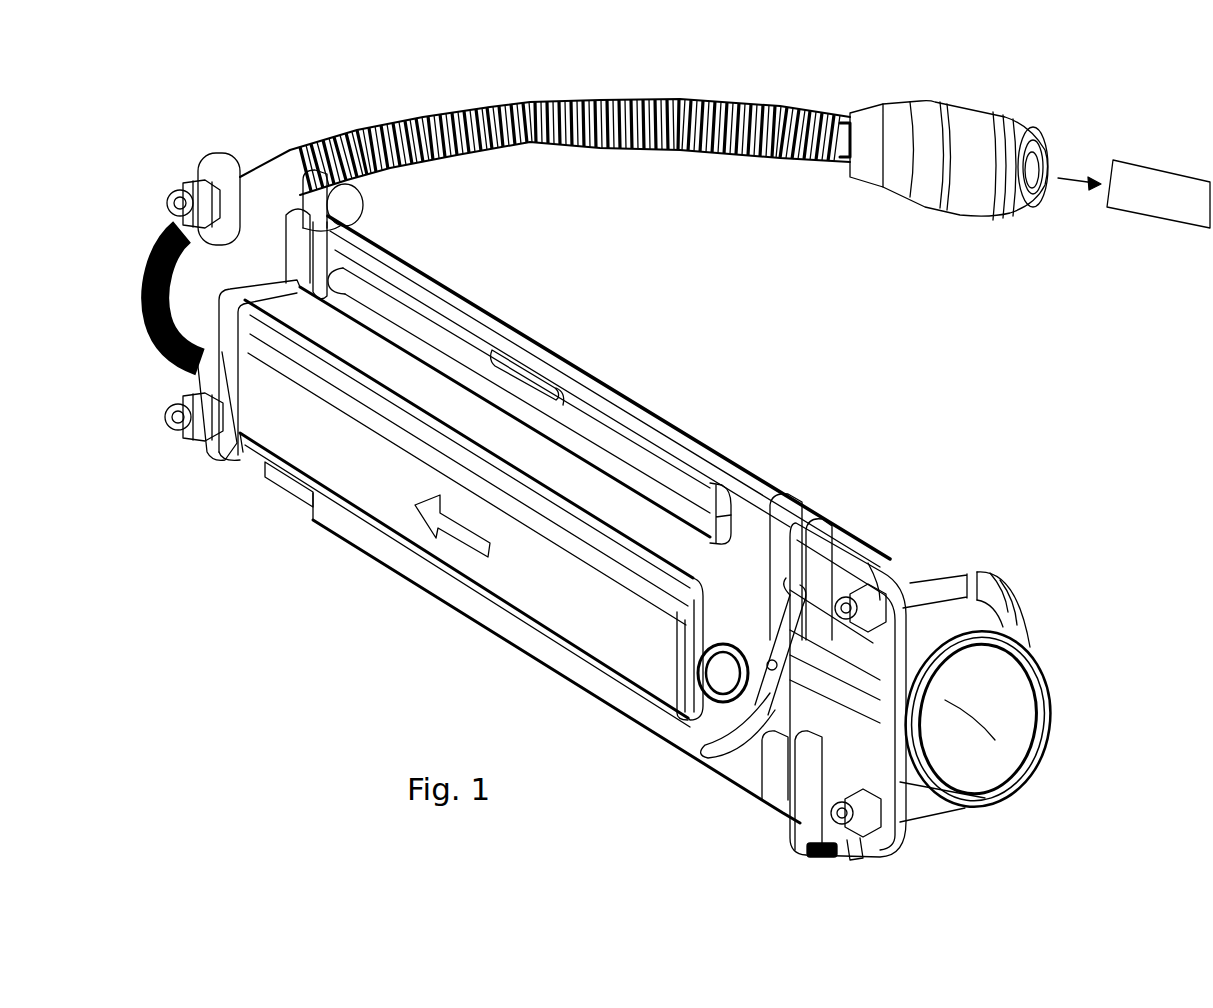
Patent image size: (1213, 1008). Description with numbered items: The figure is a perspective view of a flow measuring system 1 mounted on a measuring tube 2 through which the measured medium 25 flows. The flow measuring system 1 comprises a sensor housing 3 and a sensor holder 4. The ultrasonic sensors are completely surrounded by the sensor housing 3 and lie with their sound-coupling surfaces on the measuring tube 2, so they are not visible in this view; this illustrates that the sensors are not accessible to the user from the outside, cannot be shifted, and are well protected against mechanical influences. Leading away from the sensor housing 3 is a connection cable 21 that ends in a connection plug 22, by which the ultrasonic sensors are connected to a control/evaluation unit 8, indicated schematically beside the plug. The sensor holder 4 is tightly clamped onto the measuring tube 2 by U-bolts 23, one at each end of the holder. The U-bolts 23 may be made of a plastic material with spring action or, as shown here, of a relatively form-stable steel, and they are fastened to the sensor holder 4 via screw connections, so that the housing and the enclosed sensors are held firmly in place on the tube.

The flow measuring system 1 is at (757, 407).
The measuring tube 2 is at (1022, 780).
The sensor housing 3 is at (582, 627).
The sensor holder 4 is at (747, 493).
The control/evaluation unit 8 is at (1158, 167).
The connection cable 21 is at (671, 150).
The connection plug 22 is at (1022, 217).
The U-bolt 23 is at (990, 590).
The measured medium 25 is at (972, 728).